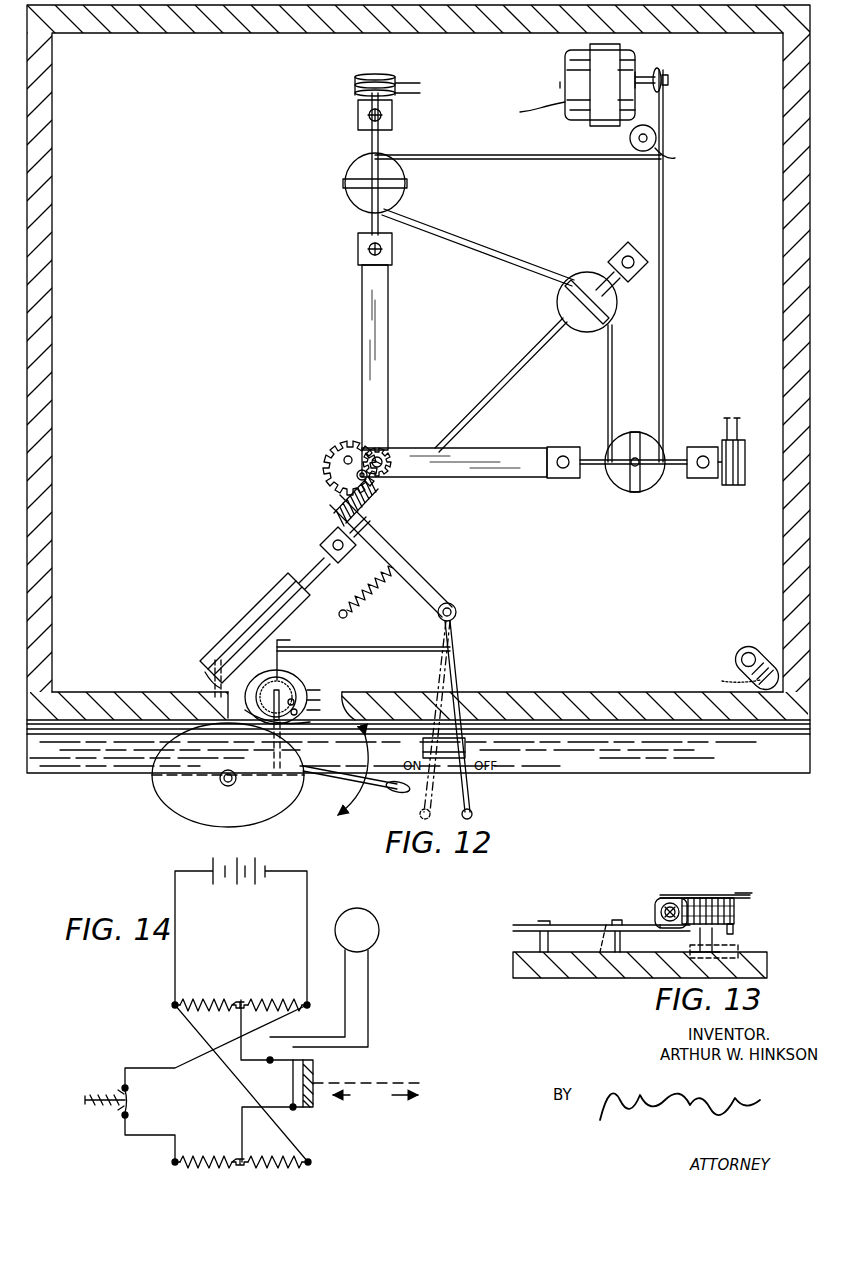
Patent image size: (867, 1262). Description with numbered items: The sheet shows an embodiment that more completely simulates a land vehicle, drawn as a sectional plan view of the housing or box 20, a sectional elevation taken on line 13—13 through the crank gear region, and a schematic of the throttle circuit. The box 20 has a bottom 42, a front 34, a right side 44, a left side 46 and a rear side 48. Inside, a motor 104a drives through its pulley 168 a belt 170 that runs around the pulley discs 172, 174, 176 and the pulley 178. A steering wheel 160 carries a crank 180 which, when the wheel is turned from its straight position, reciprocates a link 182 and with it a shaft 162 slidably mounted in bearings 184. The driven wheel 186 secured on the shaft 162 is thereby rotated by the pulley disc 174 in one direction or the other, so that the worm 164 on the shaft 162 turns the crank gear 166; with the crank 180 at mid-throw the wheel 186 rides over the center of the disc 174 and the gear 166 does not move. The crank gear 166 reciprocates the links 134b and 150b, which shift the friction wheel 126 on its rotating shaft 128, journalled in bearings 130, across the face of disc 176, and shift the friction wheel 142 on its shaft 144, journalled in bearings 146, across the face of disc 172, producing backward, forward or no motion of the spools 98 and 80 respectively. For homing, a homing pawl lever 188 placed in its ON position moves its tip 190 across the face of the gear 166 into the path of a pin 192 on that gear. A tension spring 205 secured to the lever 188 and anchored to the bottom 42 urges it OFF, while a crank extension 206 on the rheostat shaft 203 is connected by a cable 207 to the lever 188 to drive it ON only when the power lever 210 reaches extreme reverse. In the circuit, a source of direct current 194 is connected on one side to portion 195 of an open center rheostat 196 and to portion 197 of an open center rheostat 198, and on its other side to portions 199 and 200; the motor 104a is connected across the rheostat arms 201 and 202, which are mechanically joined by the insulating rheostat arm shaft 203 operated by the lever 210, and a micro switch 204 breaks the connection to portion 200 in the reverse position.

In FIG. 12, the housing 20 is at (762, 752).
In FIG. 12, the front 34 is at (592, 745).
In FIG. 12, the bottom 42 is at (240, 427).
In FIG. 13, the bottom 42 is at (560, 982).
In FIG. 12, the right side 44 is at (784, 252).
In FIG. 12, the left side 46 is at (54, 228).
In FIG. 12, the rear side 48 is at (516, 26).
In FIG. 12, the spool 80 is at (740, 478).
In FIG. 12, the spool 98 is at (378, 78).
In FIG. 12, the motor 104a is at (636, 60).
In FIG. 14, the motor 104a is at (366, 934).
In FIG. 12, the friction wheel 126 is at (350, 186).
In FIG. 12, the rotating shaft 128 is at (372, 147).
In FIG. 12, the bearings 130 is at (358, 120).
In FIG. 12, the link 134b is at (385, 354).
In FIG. 13, the link 134b is at (752, 884).
In FIG. 12, the friction wheel 142 is at (641, 482).
In FIG. 12, the shaft 144 is at (598, 470).
In FIG. 12, the bearings 146 is at (583, 440).
In FIG. 12, the link 150b is at (529, 468).
In FIG. 13, the link 150b is at (672, 895).
In FIG. 12, the steering wheel 160 is at (176, 798).
In FIG. 12, the shaft 162 is at (498, 412).
In FIG. 13, the shaft 162 is at (666, 926).
In FIG. 12, the worm 164 is at (378, 498).
In FIG. 13, the worm 164 is at (662, 915).
In FIG. 12, the crank gear 166 is at (372, 455).
In FIG. 13, the crank gear 166 is at (738, 912).
In FIG. 12, the pulley 168 is at (664, 79).
In FIG. 12, the belt 170 is at (664, 216).
In FIG. 12, the pulley disc 172 is at (646, 444).
In FIG. 12, the pulley disc 174 is at (587, 326).
In FIG. 12, the pulley disc 176 is at (405, 195).
In FIG. 12, the pulley 178 is at (657, 137).
In FIG. 12, the crank 180 is at (214, 680).
In FIG. 12, the link 182 is at (278, 594).
In FIG. 12, the bearings 184 is at (627, 250).
In FIG. 12, the driven wheel 186 is at (578, 286).
In FIG. 12, the homing pawl lever 188 is at (455, 578).
In FIG. 13, the homing pawl lever 188 is at (604, 922).
In FIG. 12, the tip 190 is at (352, 496).
In FIG. 13, the tip 190 is at (718, 960).
In FIG. 12, the pin 192 is at (344, 460).
In FIG. 13, the pin 192 is at (736, 931).
In FIG. 14, the source of direct current 194 is at (238, 880).
In FIG. 14, the portion 195 is at (198, 1003).
In FIG. 14, the open center rheostat 196 is at (245, 993).
In FIG. 14, the portion 197 is at (292, 1156).
In FIG. 14, the open center rheostat 198 is at (234, 1150).
In FIG. 14, the portion 199 is at (273, 1003).
In FIG. 14, the portion 200 is at (205, 1152).
In FIG. 14, the rheostat arm 201 is at (241, 1018).
In FIG. 14, the rheostat arm 202 is at (243, 1120).
In FIG. 14, the insulating rheostat arm shaft 203 is at (313, 1068).
In FIG. 12, the micro switch 204 is at (770, 662).
In FIG. 14, the micro switch 204 is at (130, 1098).
In FIG. 12, the tension spring 205 is at (358, 592).
In FIG. 13, the tension spring 205 is at (606, 949).
In FIG. 12, the crank extension 206 is at (288, 662).
In FIG. 12, the cable 207 is at (366, 652).
In FIG. 12, the power lever 210 is at (372, 774).
In FIG. 12, the section line 13 is at (347, 404).